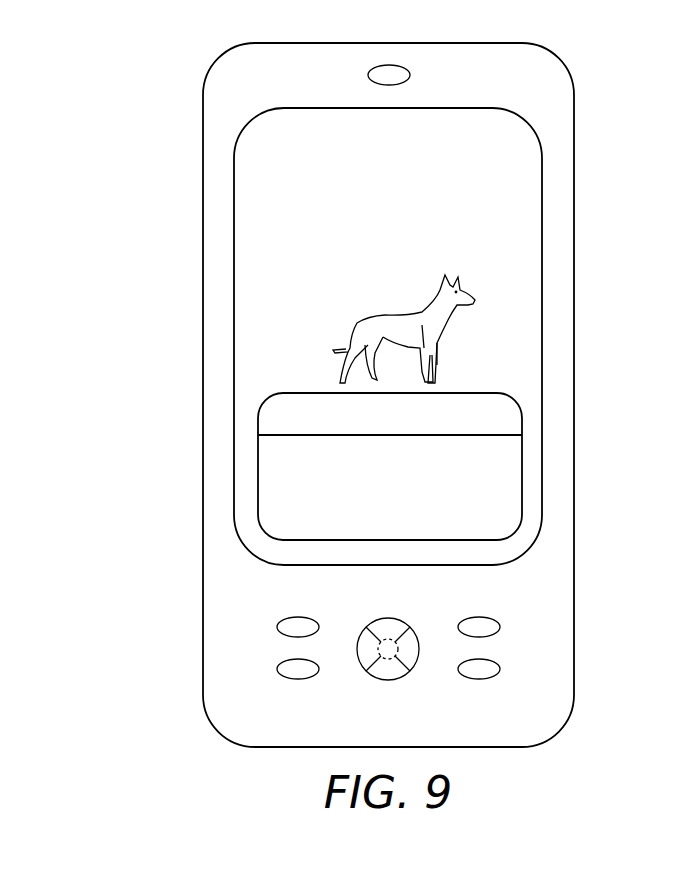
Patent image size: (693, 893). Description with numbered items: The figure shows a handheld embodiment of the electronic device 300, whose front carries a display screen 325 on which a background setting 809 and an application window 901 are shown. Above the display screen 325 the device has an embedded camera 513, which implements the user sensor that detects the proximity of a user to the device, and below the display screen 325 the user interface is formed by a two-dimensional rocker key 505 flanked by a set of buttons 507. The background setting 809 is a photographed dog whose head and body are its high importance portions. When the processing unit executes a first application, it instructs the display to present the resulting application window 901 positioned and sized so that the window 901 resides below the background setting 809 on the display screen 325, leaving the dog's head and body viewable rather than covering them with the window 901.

The electronic device 300 is at (574, 118).
The display screen 325 is at (542, 378).
The camera 513 is at (388, 65).
The application window 901 is at (522, 477).
The background setting 809 is at (400, 310).
The set of buttons 507 is at (298, 680).
The two-dimensional rocker key 505 is at (388, 680).